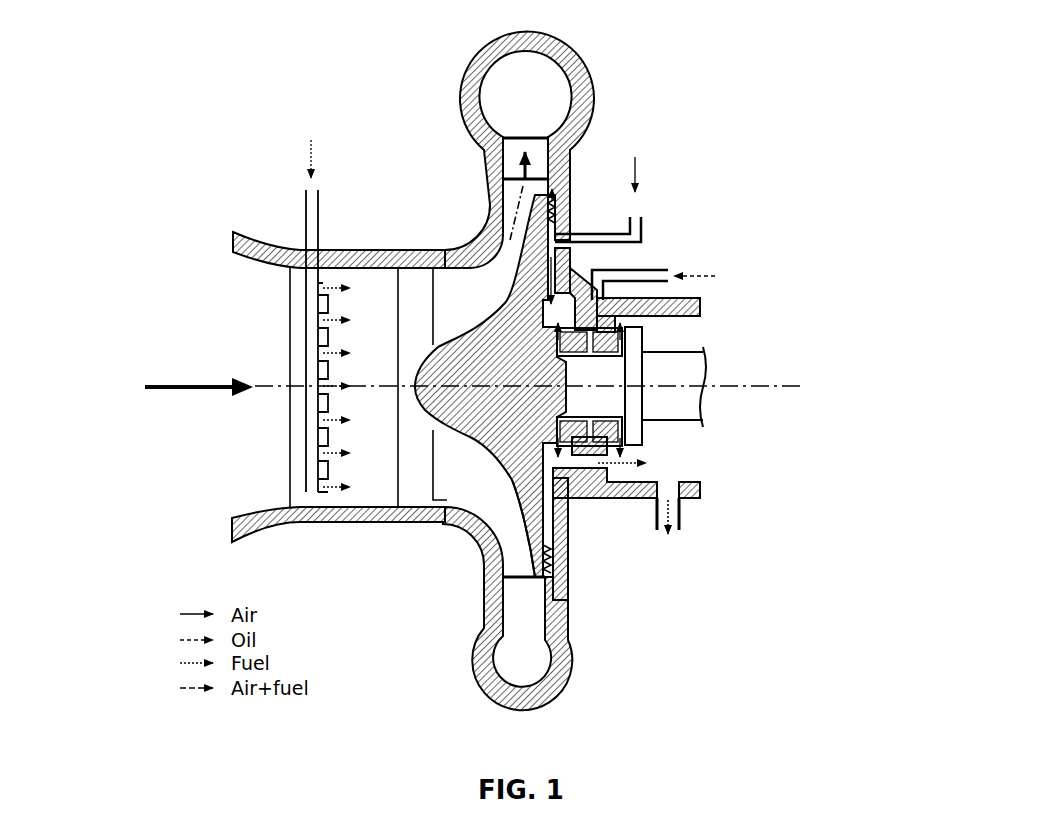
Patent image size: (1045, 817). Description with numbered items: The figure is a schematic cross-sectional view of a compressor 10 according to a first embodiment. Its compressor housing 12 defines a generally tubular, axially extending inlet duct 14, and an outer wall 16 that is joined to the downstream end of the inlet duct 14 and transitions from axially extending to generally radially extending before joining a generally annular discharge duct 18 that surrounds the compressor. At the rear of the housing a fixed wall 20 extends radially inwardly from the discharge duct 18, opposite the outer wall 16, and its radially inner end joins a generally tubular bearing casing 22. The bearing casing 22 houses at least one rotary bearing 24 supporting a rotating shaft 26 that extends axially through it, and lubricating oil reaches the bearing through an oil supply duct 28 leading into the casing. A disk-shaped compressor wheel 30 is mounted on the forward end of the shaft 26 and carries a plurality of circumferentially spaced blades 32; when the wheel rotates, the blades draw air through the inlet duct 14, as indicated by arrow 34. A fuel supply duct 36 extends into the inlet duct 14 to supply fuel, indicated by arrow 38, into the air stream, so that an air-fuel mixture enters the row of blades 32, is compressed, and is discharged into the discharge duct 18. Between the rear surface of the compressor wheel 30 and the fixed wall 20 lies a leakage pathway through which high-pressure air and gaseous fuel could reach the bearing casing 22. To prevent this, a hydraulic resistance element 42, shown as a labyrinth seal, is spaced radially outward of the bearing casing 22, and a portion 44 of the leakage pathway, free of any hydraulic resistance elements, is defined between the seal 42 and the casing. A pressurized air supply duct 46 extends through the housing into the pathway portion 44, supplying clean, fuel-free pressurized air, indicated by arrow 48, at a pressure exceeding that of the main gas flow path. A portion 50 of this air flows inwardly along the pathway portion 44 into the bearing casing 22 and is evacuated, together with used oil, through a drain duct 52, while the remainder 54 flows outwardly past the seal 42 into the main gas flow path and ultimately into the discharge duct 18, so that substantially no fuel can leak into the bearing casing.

The compressor 10 is at (380, 56).
The compressor housing 12 is at (265, 240).
The inlet duct 14 is at (262, 522).
The outer wall 16 is at (475, 232).
The discharge duct 18 is at (477, 678).
The fixed wall 20 is at (568, 587).
The bearing casing 22 is at (698, 307).
The rotary bearing 24 is at (640, 427).
The shaft 26 is at (687, 368).
The oil supply duct 28 is at (660, 270).
The compressor wheel 30 is at (497, 440).
The blades 32 is at (493, 510).
The arrow 34 is at (188, 382).
The fuel supply duct 36 is at (305, 470).
The arrow 38 is at (316, 163).
The hydraulic resistance element 42 is at (567, 565).
The portion of the leakage pathway 44 is at (567, 538).
The pressurized air supply duct 46 is at (641, 222).
The arrow 48 is at (584, 239).
The portion of the pressurized air 50 is at (568, 265).
The drain duct 52 is at (680, 513).
The remainder of the pressurized air 54 is at (568, 190).